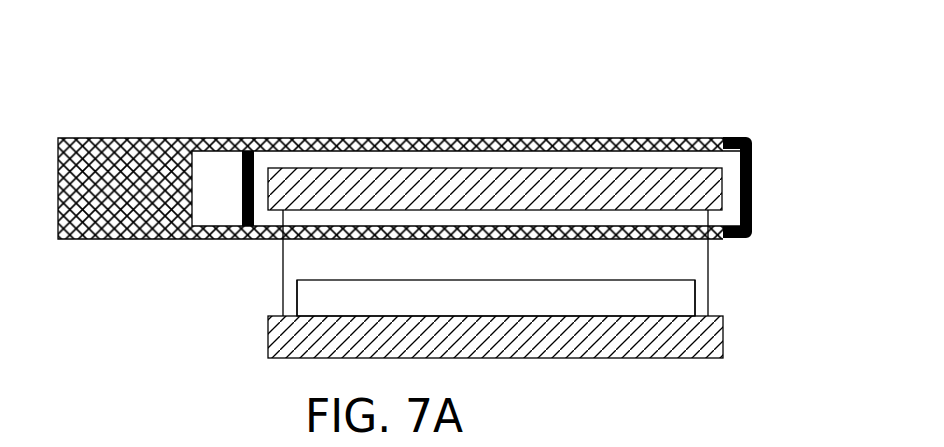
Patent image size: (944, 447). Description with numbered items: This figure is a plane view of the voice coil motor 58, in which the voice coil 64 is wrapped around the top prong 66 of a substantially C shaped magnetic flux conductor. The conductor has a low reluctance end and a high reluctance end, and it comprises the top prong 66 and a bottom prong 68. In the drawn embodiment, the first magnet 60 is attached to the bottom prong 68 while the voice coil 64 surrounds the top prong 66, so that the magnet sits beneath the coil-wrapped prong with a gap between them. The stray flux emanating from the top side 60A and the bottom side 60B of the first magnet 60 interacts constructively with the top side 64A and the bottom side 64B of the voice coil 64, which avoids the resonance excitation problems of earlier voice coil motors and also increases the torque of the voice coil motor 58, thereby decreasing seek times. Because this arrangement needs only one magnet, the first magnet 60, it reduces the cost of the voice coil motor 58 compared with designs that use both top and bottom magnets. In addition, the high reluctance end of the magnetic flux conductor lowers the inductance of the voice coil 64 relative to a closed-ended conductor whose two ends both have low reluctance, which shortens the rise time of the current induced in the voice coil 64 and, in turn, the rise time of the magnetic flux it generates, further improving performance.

The voice coil motor 58 is at (691, 61).
The first magnet 60 is at (536, 280).
The top side of the first magnet 60A is at (695, 298).
The bottom side of the first magnet 60B is at (297, 300).
The voice coil 64 is at (741, 137).
The top side of the voice coil 64A is at (752, 192).
The bottom side of the voice coil 64B is at (242, 190).
The top prong 66 is at (465, 168).
The bottom prong 68 is at (707, 338).